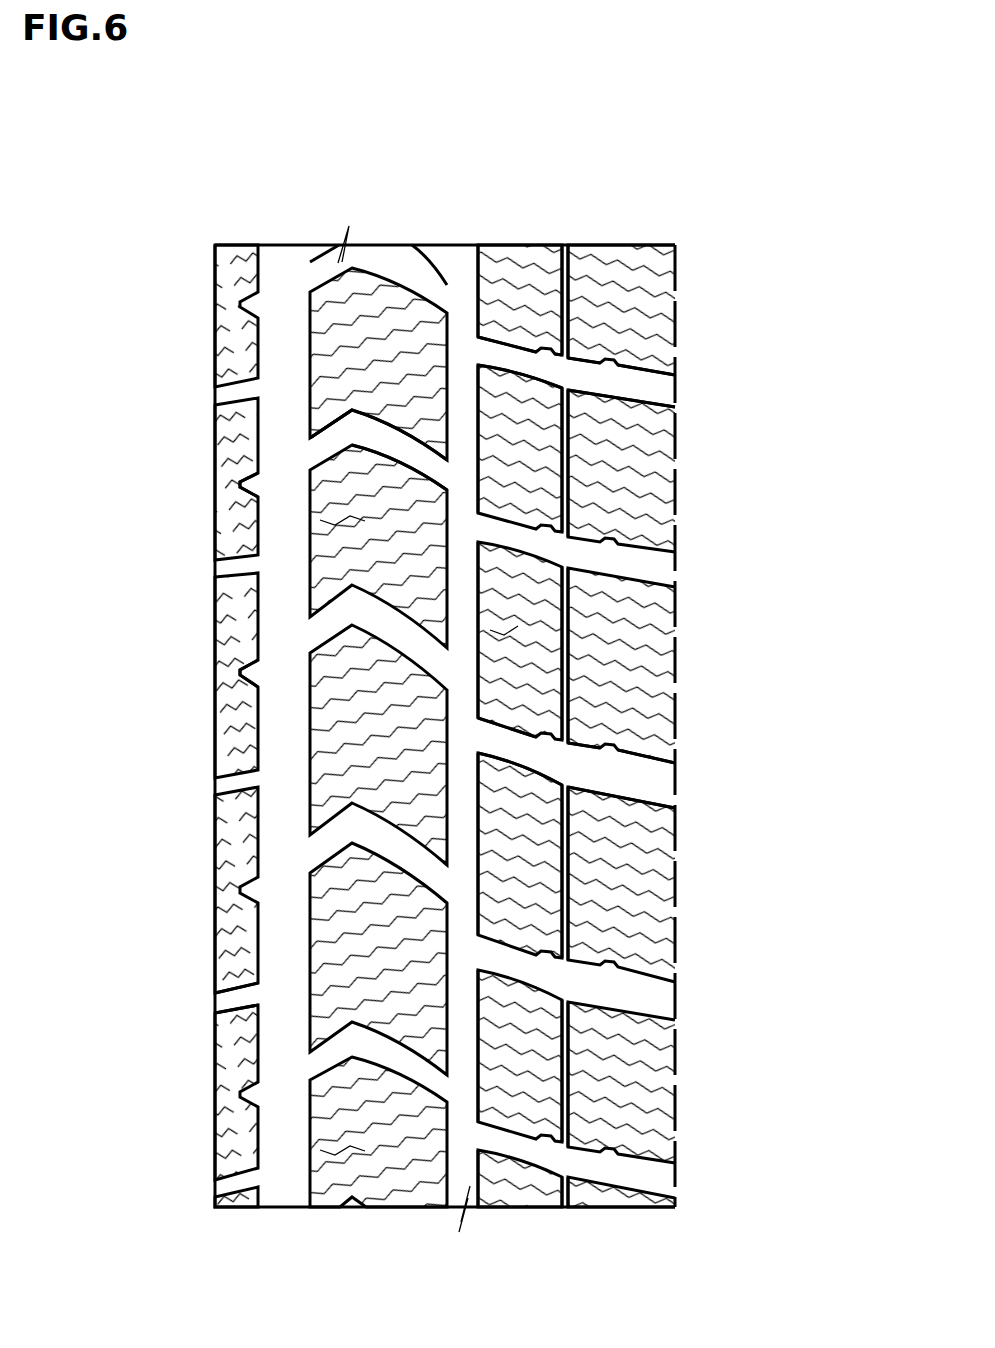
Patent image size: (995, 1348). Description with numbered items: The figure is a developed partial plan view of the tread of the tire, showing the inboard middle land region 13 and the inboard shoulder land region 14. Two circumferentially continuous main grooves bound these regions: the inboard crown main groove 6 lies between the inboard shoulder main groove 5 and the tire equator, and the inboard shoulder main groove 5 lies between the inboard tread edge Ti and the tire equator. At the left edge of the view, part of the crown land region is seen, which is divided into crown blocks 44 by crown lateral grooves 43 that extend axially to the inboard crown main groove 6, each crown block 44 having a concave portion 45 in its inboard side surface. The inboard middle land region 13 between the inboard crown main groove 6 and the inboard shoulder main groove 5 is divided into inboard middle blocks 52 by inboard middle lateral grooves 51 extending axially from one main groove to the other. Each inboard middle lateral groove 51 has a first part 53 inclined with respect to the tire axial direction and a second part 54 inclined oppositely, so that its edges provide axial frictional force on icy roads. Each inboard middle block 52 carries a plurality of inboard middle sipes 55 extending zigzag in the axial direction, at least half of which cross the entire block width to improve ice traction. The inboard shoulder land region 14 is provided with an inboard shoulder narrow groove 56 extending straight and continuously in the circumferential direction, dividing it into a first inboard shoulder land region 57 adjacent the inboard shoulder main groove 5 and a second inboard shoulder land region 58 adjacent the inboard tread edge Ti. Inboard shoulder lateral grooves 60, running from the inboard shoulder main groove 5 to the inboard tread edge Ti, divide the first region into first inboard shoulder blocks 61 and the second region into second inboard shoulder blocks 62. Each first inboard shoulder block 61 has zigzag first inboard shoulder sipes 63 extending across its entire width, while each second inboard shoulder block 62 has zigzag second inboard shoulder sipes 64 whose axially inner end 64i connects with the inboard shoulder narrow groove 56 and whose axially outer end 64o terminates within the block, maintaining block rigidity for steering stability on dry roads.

The inboard shoulder main groove 5 is at (460, 300).
The inboard crown main groove 6 is at (283, 300).
The inboard middle land region 13 is at (248, 682).
The inboard shoulder land region 14 is at (576, 234).
The crown lateral groove 43 is at (241, 1000).
The crown block 44 is at (241, 500).
The concave portion 45 is at (251, 675).
The inboard middle lateral groove 51 is at (341, 430).
The inboard middle block 52 is at (395, 760).
The first part 53 is at (335, 620).
The second part 54 is at (405, 640).
The inboard middle sipe 55 is at (377, 512).
The inboard shoulder narrow groove 56 is at (567, 1118).
The first inboard shoulder land region 57 is at (512, 295).
The second inboard shoulder land region 58 is at (620, 310).
The inboard shoulder lateral groove 60 is at (578, 380).
The first inboard shoulder block 61 is at (518, 455).
The second inboard shoulder block 62 is at (620, 490).
The first inboard shoulder sipe 63 is at (517, 622).
The second inboard shoulder sipe 64 is at (640, 867).
The axially inner end 64i is at (572, 823).
The axially outer end 64o is at (673, 882).
The inboard tread edge Ti is at (684, 270).